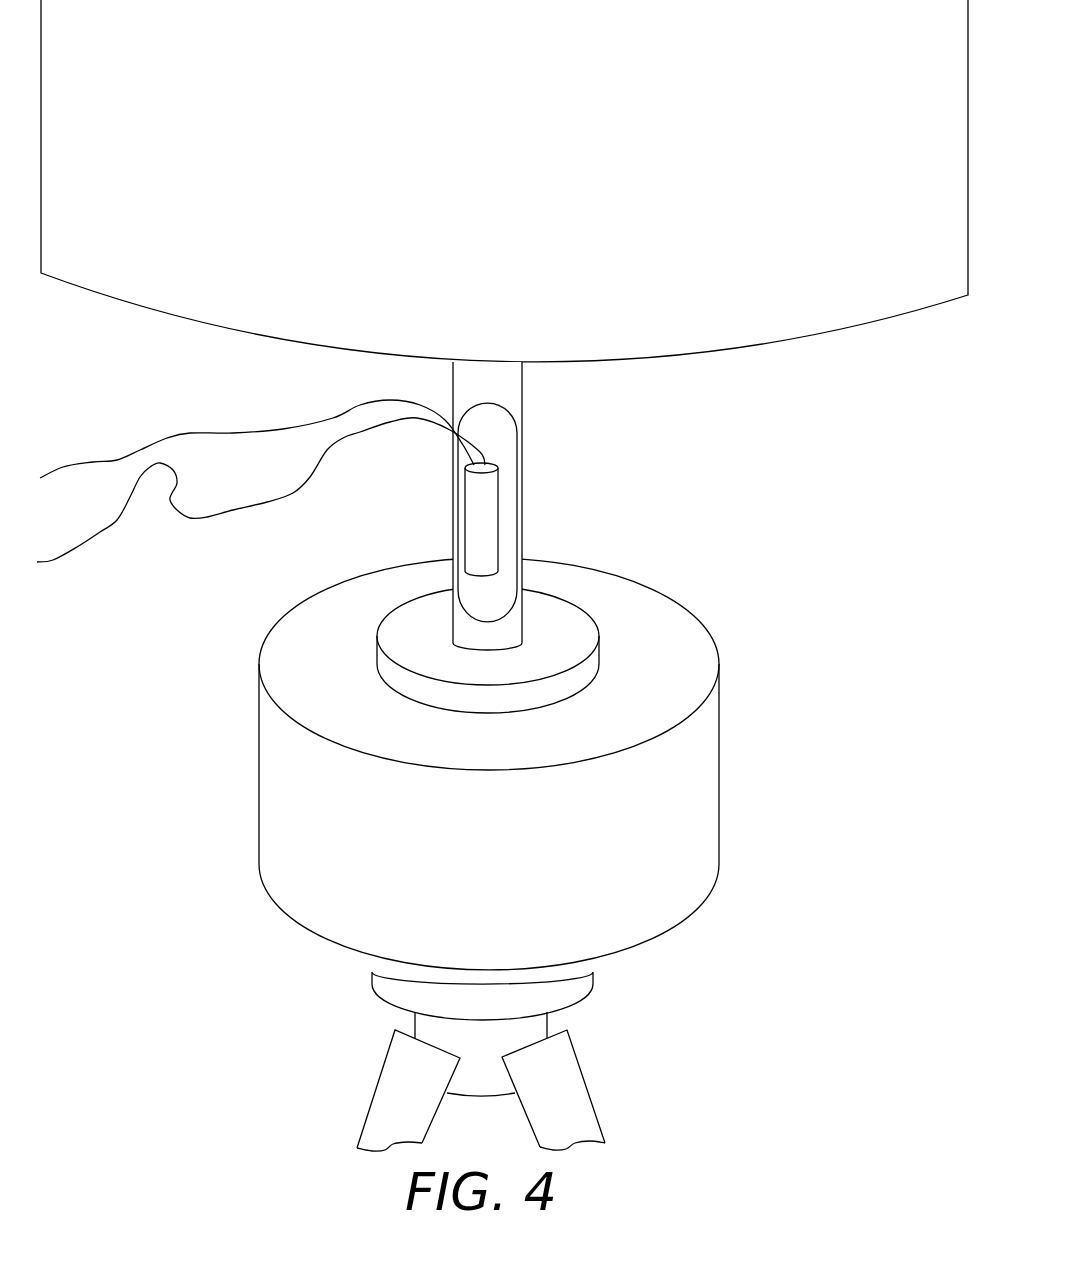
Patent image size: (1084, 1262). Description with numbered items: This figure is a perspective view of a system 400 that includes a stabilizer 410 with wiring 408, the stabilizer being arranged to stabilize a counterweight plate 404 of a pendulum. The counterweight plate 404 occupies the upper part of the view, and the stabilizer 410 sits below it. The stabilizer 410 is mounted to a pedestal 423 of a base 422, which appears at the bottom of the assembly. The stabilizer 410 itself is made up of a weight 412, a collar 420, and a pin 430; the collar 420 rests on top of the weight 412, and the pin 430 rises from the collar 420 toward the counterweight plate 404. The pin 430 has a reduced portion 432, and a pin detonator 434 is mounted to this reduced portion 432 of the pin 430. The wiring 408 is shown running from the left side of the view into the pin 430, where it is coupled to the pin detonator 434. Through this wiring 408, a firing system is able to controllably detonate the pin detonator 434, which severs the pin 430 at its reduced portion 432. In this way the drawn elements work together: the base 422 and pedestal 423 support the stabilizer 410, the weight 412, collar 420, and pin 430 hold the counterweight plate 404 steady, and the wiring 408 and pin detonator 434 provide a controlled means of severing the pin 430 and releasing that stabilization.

The system 400 is at (883, 373).
The counterweight plate 404 is at (522, 169).
The wiring 408 is at (120, 439).
The stabilizer 410 is at (803, 893).
The weight 412 is at (690, 667).
The collar 420 is at (558, 640).
The base 422 is at (803, 948).
The pedestal 423 is at (565, 993).
The pin 430 is at (517, 407).
The reduced portion 432 is at (507, 428).
The pin detonator 434 is at (476, 525).